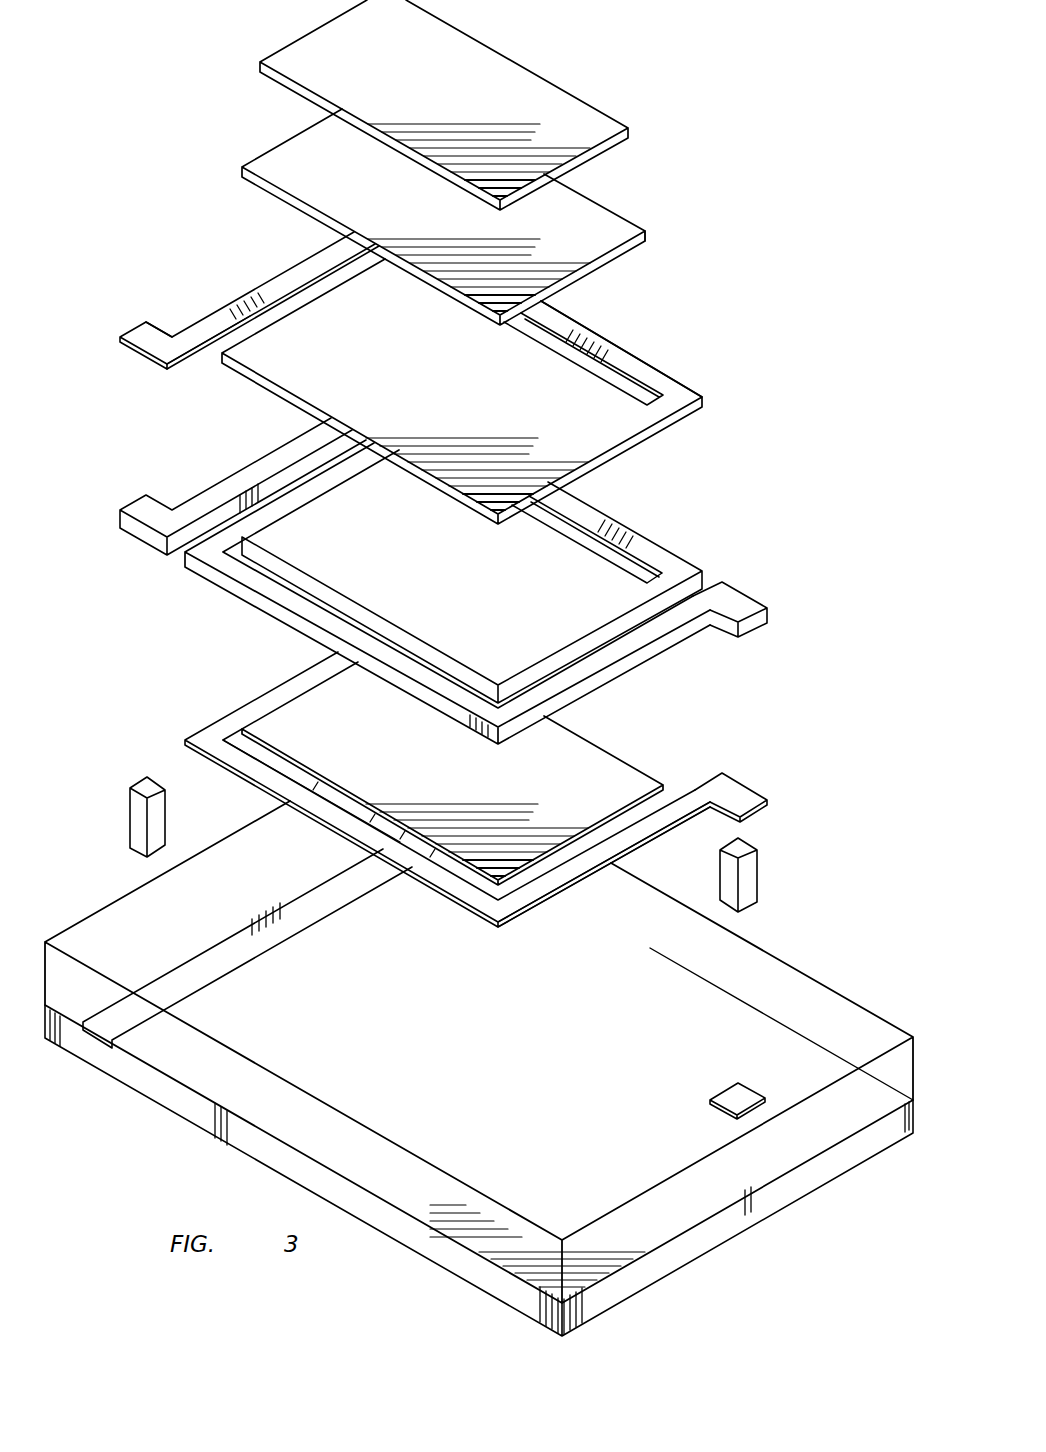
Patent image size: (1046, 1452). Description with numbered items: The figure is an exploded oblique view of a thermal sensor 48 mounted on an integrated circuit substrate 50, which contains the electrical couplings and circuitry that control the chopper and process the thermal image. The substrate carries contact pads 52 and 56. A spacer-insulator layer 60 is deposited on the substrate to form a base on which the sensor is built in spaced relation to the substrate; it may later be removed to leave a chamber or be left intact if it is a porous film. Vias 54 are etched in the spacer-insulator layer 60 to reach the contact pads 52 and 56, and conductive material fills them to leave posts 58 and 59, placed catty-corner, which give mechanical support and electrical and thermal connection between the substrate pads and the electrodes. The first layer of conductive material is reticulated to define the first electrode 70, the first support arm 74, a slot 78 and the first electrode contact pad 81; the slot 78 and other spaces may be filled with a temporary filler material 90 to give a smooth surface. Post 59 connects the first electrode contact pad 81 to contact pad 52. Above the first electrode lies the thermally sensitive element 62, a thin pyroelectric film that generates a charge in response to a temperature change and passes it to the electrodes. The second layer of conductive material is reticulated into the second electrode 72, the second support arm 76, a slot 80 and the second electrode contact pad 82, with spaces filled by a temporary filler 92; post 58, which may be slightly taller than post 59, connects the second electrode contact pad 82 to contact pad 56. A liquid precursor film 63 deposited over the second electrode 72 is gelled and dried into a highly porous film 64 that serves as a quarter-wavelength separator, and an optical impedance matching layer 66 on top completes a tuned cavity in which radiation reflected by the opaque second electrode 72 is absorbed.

The thermal sensor 48 is at (479, 668).
The integrated circuit substrate 50 is at (820, 1180).
The contact pad 52 is at (745, 1097).
The vias 54 is at (105, 922).
The contact pad 56 is at (175, 968).
The post 58 is at (127, 812).
The post 59 is at (762, 876).
The spacer-insulator layer 60 is at (862, 1020).
The thermally sensitive element 62 is at (393, 561).
The precursor film 63 is at (668, 243).
The porous film 64 is at (393, 203).
The optical impedance matching layer 66 is at (390, 85).
The first electrode 70 is at (393, 763).
The second electrode 72 is at (393, 373).
The first support arm 74 is at (541, 900).
The second support arm 76 is at (284, 287).
The slot 78 is at (262, 745).
The slot 80 is at (622, 385).
The first electrode contact pad 81 is at (736, 802).
The second electrode contact pad 82 is at (152, 333).
The temporary filler material 90 is at (685, 779).
The temporary filler 92 is at (206, 362).